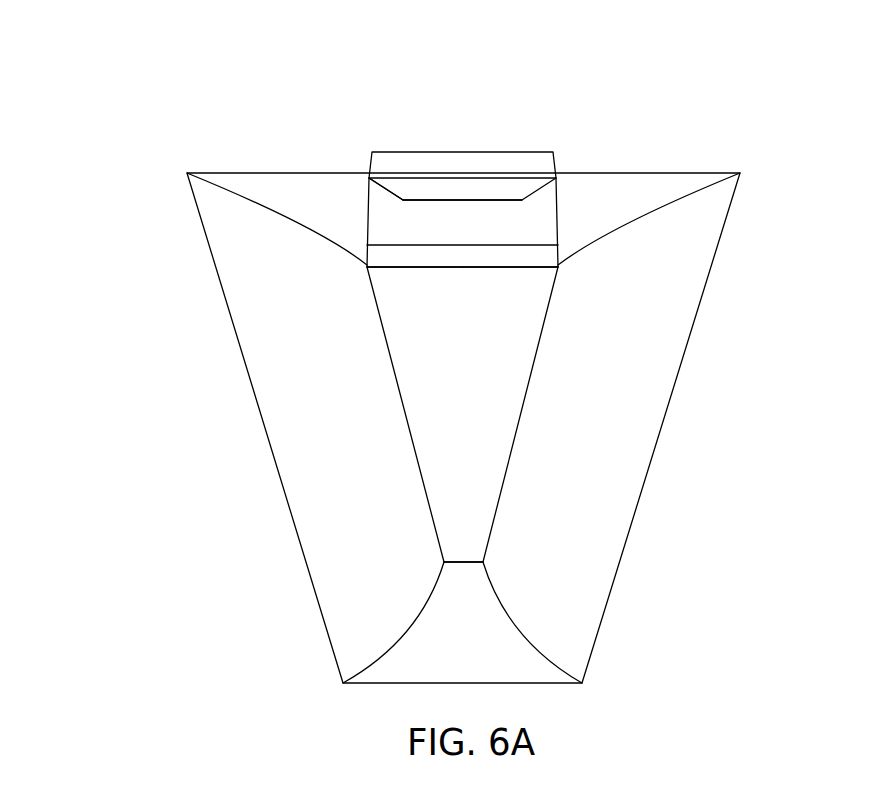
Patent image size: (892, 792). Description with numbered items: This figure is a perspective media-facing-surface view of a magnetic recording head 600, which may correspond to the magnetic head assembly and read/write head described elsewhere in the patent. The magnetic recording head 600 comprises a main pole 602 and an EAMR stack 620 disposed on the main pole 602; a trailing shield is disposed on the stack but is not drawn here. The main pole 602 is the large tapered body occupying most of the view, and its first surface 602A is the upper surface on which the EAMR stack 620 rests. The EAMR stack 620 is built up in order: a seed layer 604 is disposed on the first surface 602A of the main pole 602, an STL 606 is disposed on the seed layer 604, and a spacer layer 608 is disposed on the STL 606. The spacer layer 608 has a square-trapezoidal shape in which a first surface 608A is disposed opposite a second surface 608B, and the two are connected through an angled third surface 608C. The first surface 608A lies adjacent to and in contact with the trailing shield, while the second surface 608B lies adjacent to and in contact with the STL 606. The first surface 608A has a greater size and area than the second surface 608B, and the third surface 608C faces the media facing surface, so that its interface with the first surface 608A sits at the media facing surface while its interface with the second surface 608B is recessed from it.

The magnetic recording head 600 is at (140, 143).
The main pole 602 is at (480, 392).
The first surface of the main pole 602A is at (448, 267).
The seed layer 604 is at (532, 257).
The STL 606 is at (412, 223).
The spacer layer 608 is at (424, 160).
The first surface of the spacer layer 608A is at (525, 165).
The second surface of the spacer layer 608B is at (503, 202).
The third surface of the spacer layer 608C is at (398, 183).
The EAMR stack 620 is at (500, 97).